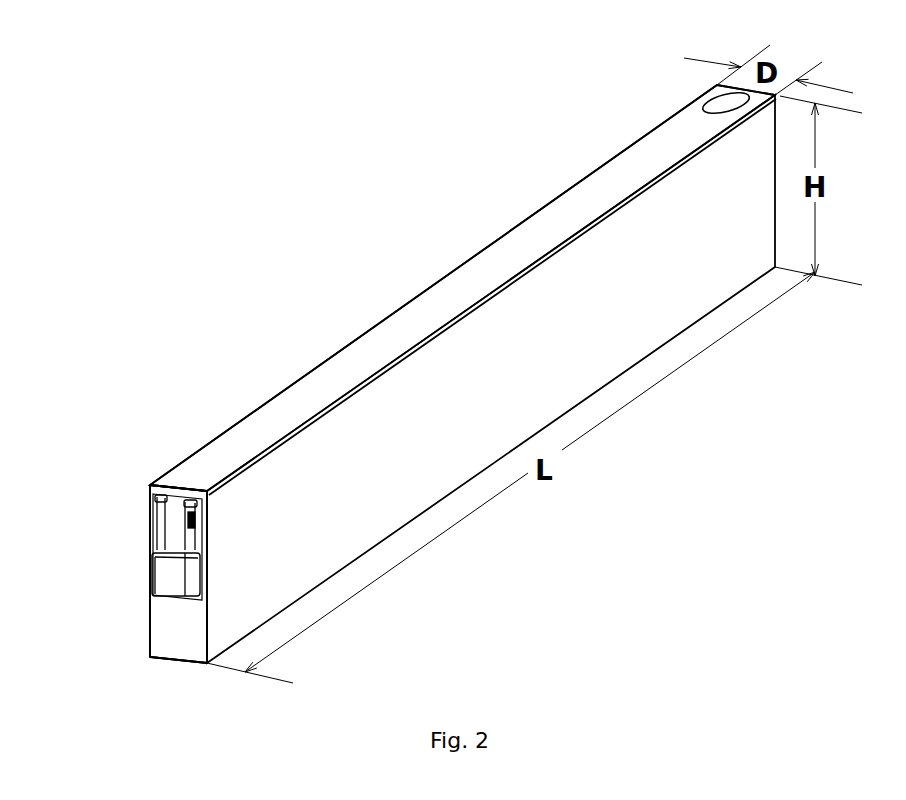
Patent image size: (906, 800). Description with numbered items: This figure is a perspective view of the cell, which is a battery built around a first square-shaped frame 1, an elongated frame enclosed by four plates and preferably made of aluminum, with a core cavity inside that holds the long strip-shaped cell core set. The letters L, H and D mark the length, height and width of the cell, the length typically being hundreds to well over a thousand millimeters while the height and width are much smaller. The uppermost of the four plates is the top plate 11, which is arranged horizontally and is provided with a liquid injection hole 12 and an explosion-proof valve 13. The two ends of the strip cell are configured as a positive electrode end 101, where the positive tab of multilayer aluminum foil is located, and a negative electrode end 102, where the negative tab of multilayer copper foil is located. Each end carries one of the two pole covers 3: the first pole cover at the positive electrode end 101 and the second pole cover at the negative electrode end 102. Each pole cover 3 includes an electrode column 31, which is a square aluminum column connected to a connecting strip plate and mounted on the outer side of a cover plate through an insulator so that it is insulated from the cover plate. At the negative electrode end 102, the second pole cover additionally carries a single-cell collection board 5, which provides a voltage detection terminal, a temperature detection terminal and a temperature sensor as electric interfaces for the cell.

The first square-shaped frame 1 is at (500, 337).
The top plate 11 is at (537, 230).
The liquid injection hole 12 is at (182, 487).
The explosion-proof valve 13 is at (693, 103).
The positive electrode end 101 is at (683, 80).
The negative electrode end 102 is at (182, 433).
The single-cell collection board 5 is at (150, 523).
The electrode column 31 is at (165, 577).
The pole cover 3 is at (170, 618).